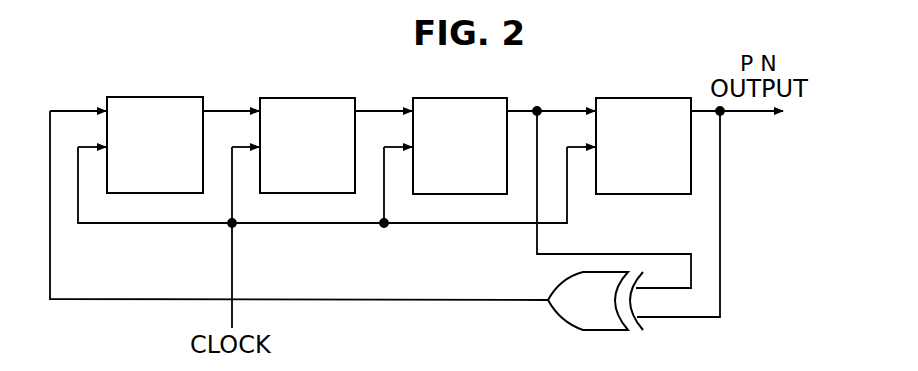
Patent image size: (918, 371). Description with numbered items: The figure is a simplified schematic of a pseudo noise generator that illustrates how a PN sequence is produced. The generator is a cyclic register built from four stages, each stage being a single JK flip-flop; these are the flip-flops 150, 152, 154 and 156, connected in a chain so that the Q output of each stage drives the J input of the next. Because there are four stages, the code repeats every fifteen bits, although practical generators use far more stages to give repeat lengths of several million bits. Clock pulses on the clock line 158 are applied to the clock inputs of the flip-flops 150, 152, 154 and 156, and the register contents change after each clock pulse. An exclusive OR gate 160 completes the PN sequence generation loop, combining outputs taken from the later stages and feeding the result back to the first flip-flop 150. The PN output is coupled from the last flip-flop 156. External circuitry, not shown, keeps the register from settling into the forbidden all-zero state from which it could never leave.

The JK flip-flop 150 is at (162, 104).
The JK flip-flop 152 is at (315, 102).
The JK flip-flop 154 is at (468, 103).
The JK flip-flop 156 is at (654, 103).
The clock line 158 is at (232, 260).
The exclusive OR gate 160 is at (575, 290).